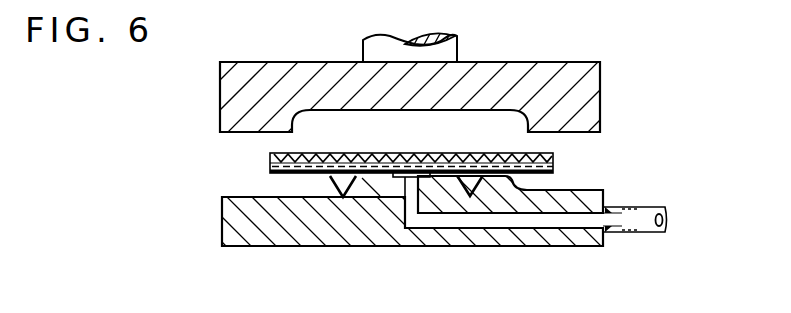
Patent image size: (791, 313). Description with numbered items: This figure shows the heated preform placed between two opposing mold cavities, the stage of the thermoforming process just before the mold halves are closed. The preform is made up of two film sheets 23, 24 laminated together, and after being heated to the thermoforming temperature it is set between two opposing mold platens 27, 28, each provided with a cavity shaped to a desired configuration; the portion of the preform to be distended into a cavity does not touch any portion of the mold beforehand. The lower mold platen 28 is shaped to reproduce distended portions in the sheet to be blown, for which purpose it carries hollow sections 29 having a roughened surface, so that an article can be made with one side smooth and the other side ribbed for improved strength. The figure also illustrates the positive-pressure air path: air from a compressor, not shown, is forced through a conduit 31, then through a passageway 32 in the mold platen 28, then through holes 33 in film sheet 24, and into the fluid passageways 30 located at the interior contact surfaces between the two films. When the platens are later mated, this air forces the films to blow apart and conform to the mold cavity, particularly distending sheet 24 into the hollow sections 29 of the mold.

The sheet 23 is at (393, 154).
The film sheet 24 is at (270, 174).
The mold platen 27 is at (220, 104).
The mold platen 28 is at (222, 229).
The hollow sections 29 is at (333, 181).
The fluid passageways 30 is at (527, 178).
The conduit 31 is at (648, 233).
The passageway 32 is at (497, 224).
The holes 33 is at (371, 181).